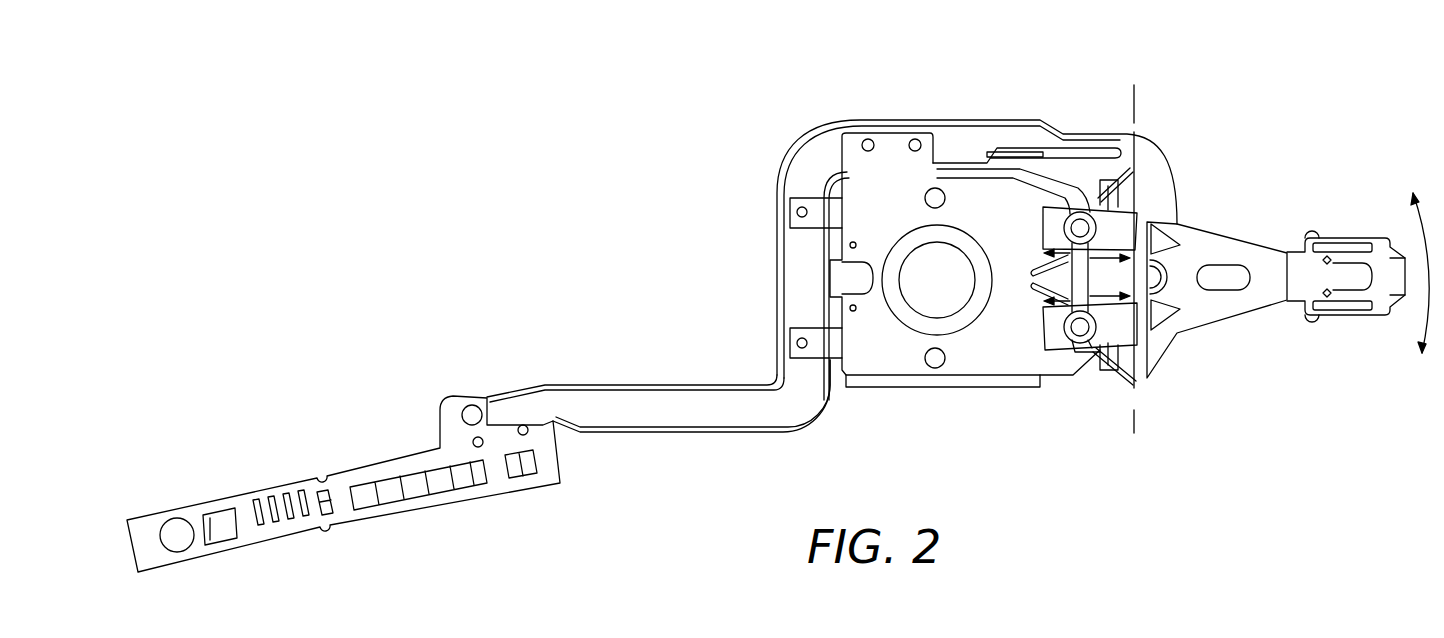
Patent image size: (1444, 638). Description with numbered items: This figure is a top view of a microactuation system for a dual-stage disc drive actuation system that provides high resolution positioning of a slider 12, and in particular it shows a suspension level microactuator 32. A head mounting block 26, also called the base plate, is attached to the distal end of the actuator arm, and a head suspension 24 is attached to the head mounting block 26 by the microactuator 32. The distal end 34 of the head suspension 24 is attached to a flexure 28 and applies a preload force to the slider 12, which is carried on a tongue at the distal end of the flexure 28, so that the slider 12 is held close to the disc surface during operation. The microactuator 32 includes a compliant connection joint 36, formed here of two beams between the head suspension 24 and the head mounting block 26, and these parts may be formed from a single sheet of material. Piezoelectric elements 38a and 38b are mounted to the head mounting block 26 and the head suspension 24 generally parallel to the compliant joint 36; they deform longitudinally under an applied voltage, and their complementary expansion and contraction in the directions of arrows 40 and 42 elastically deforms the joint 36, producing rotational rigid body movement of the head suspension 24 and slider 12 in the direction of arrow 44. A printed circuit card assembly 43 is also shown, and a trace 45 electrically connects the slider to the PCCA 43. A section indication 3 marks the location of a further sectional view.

The section line 3- 3 is at (1138, 92).
The slider 12 is at (1393, 280).
The head suspension 24 is at (1222, 248).
The head mounting block 26 is at (960, 352).
The flexure 28 is at (1343, 245).
The suspension level microactuator 32 is at (1062, 128).
The distal end of head suspension 34 is at (1348, 273).
The compliant connection joint 36 is at (1122, 278).
The piezoelectric element 38a is at (1098, 197).
The piezoelectric element 38b is at (1107, 355).
The arrow 40 is at (1070, 247).
The arrow 42 is at (1063, 305).
The printed circuit card assembly 43 is at (478, 492).
The arrow 44 is at (1418, 352).
The trace 45 is at (693, 408).